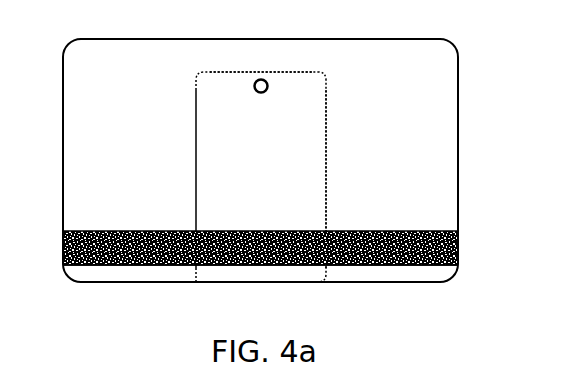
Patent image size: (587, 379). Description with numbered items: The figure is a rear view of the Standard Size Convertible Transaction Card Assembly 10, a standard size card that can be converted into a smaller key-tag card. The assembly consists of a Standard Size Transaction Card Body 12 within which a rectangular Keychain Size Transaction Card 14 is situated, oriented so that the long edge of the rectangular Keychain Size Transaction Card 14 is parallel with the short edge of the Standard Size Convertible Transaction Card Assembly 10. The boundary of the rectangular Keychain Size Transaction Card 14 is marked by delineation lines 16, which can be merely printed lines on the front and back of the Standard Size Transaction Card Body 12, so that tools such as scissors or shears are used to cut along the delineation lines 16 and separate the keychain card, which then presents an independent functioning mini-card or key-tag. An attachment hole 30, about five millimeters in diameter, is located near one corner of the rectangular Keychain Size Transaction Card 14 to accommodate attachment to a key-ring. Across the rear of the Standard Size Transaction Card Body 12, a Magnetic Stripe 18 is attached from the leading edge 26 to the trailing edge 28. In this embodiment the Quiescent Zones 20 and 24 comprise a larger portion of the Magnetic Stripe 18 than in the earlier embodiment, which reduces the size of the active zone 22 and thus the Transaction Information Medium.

The Standard Size Convertible Transaction Card Assembly 10 is at (504, 71).
The Standard Size Transaction Card Body 12 is at (442, 131).
The rectangular Keychain Size Transaction Card 14 is at (297, 215).
The delineation lines 16 is at (300, 66).
The Magnetic Stripe 18 is at (458, 238).
The Quiescent Zone 20 is at (130, 266).
The active zone 22 is at (262, 266).
The Quiescent Zone 24 is at (410, 266).
The leading edge 26 is at (58, 191).
The trailing edge 28 is at (463, 155).
The attachment hole 30 is at (258, 78).